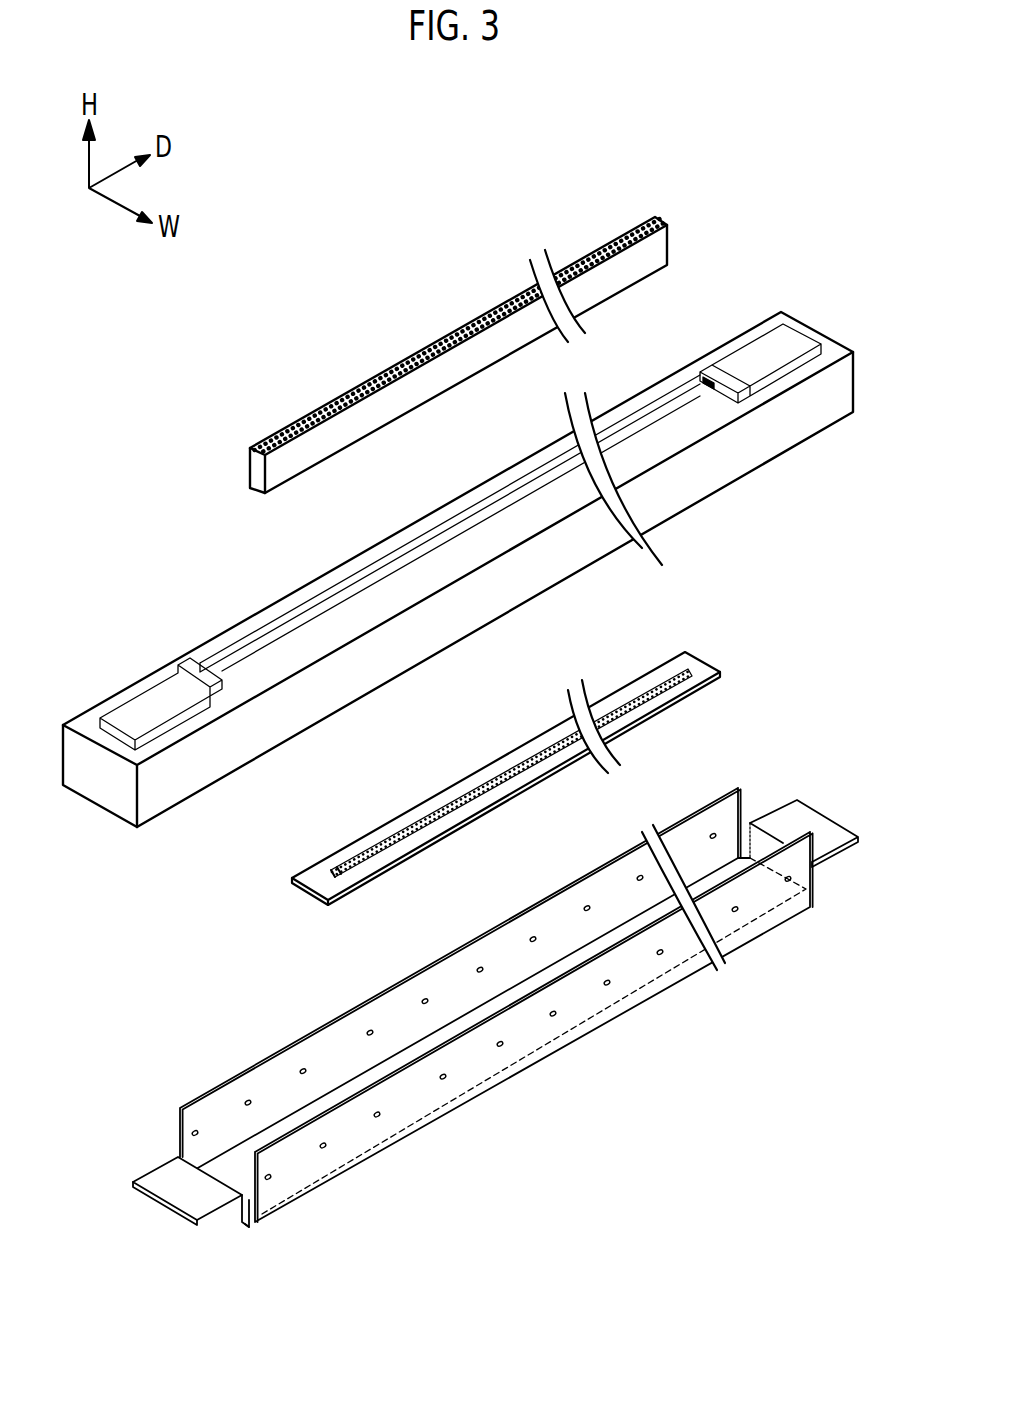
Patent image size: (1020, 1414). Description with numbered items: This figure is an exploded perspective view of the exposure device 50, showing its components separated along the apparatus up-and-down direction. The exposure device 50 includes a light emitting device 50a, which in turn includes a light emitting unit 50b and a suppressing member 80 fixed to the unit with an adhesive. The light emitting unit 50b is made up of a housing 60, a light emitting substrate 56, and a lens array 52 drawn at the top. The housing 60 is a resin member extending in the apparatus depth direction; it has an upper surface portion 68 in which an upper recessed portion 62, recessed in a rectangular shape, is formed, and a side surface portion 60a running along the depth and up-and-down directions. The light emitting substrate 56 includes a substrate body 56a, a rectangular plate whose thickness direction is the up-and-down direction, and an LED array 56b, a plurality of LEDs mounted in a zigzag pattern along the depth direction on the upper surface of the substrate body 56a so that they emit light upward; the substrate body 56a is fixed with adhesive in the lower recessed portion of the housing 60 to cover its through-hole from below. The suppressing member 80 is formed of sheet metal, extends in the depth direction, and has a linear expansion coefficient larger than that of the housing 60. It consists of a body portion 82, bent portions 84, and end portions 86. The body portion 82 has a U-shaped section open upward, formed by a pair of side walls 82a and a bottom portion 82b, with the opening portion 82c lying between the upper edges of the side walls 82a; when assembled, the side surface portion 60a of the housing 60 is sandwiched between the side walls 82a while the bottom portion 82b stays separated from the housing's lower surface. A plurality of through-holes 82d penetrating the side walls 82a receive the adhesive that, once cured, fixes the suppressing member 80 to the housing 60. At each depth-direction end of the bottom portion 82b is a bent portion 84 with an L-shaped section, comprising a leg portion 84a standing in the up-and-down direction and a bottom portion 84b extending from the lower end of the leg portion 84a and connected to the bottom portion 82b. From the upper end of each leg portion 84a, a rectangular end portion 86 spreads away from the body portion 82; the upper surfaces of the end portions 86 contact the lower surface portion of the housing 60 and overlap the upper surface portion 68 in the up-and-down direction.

The exposure device 50 is at (780, 1122).
The light emitting device 50a is at (732, 1040).
The light emitting unit 50b is at (725, 183).
The lens array 52 is at (628, 222).
The light emitting substrate 56 is at (713, 653).
The substrate body 56a is at (682, 700).
The LED array 56b is at (344, 868).
The housing 60 is at (692, 507).
The side surface portion 60a is at (452, 627).
The upper recessed portion 62 is at (398, 551).
The upper surface portion 68 is at (193, 660).
The suppressing member 80 is at (777, 785).
The body portion 82 is at (493, 907).
The side walls 82a is at (472, 1057).
The bottom portion 82b is at (262, 1213).
The opening portion 82c is at (217, 1113).
The through-holes 82d is at (370, 1030).
The bent portion 84 is at (285, 1293).
The leg portion 84a is at (230, 1217).
The bottom portion 84b is at (248, 1224).
The end portion 86 is at (820, 810).